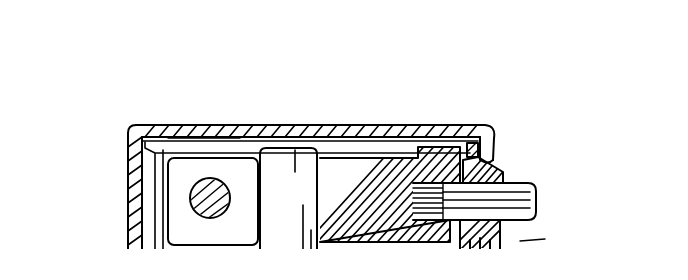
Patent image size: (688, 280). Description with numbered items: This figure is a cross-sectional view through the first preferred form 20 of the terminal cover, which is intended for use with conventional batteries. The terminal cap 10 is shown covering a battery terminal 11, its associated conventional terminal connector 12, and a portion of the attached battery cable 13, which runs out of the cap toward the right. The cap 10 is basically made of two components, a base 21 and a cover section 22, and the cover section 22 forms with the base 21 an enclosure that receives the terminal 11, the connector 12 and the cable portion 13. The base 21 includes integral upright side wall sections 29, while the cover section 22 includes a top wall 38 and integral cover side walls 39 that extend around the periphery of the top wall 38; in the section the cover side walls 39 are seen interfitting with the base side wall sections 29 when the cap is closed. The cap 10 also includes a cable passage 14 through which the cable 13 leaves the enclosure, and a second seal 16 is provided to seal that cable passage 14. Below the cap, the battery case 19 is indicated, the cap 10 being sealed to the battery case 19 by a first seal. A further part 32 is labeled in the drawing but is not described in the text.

The cap 10 is at (105, 133).
The battery terminal 11 is at (300, 150).
The terminal connector 12 is at (418, 150).
The battery cable 13 is at (519, 216).
The cable passage 14 is at (500, 160).
The second seal 16 is at (493, 176).
The battery case 19 is at (586, 252).
The first preferred form 20 is at (285, 122).
The base 21 is at (130, 237).
The cover section 22 is at (490, 150).
The upright side wall sections 29 is at (175, 138).
The collar 32 is at (500, 249).
The top wall 38 is at (373, 125).
The cover side walls 39 is at (250, 150).